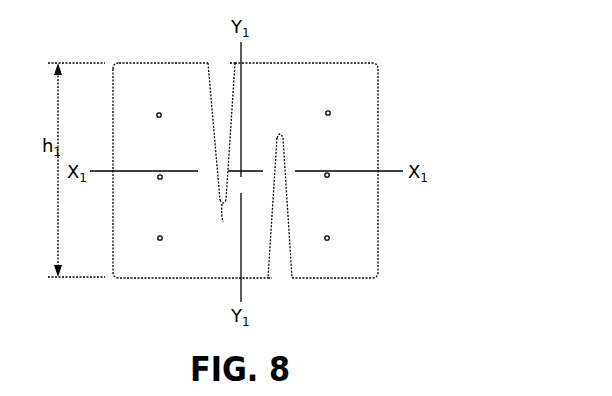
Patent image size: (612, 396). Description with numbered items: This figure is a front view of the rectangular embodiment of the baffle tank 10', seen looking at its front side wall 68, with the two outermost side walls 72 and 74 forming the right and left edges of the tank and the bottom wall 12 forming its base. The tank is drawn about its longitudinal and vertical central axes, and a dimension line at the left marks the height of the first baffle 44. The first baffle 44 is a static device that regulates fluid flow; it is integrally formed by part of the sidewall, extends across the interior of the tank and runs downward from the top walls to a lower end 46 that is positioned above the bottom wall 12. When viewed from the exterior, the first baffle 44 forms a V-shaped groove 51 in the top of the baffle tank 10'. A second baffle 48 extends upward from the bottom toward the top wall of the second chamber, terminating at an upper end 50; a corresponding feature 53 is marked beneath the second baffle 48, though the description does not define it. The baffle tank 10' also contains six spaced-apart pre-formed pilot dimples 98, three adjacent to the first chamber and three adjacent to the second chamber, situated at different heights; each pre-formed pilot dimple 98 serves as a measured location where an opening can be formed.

The baffle tank 10' is at (284, 38).
The bottom wall 12 is at (333, 278).
The first baffle 44 is at (216, 138).
The lower end 46 is at (225, 224).
The second baffle 48 is at (287, 192).
The upper end 50 is at (279, 139).
The V-shaped groove 51 is at (219, 58).
The projection opening direction 53 is at (284, 290).
The side wall 68 is at (300, 110).
The side wall 72 is at (378, 109).
The side wall 74 is at (113, 88).
The pre-formed pilot dimple 98 is at (161, 113).